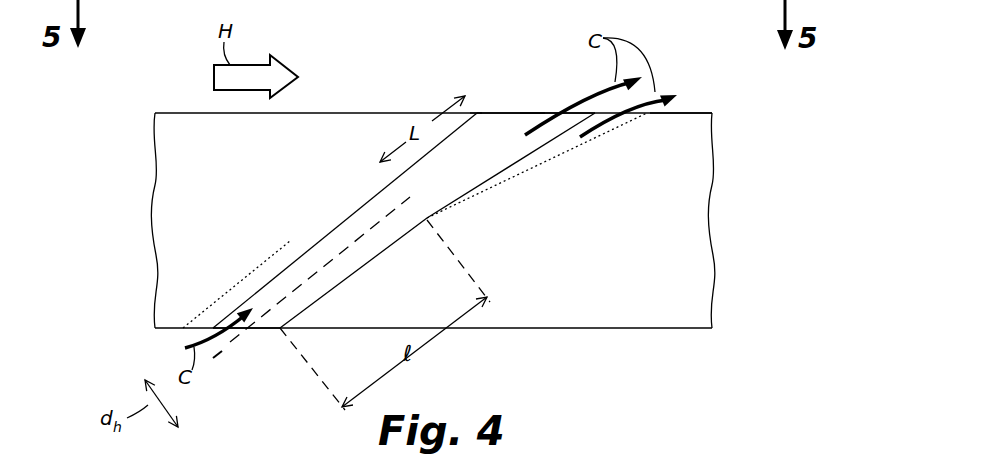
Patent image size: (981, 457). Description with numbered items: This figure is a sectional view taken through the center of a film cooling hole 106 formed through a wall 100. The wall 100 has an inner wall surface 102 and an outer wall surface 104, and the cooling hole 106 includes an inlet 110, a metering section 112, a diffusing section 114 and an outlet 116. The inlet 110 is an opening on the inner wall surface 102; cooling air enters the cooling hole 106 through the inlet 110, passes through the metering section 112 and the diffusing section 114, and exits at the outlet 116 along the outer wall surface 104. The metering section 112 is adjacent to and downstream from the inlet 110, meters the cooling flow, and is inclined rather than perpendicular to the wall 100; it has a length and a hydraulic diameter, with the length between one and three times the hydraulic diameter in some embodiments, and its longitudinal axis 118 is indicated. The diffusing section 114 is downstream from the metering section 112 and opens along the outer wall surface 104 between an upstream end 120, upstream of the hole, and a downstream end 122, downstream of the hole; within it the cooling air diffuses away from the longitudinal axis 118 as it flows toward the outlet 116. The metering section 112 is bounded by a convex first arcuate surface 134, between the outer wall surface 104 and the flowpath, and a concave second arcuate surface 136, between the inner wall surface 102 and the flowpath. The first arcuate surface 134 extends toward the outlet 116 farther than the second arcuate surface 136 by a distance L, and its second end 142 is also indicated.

The wall 100 is at (145, 215).
The inner wall surface 102 is at (690, 329).
The outer wall surface 104 is at (185, 112).
The cooling hole 106 is at (404, 227).
The inlet 110 is at (270, 330).
The metering section 112 is at (326, 295).
The diffusing section 114 is at (487, 129).
The outlet 116 is at (533, 113).
The longitudinal axis 118 is at (222, 352).
The upstream end 120 is at (472, 108).
The downstream end 122 is at (690, 112).
The first arcuate surface 134 is at (283, 270).
The second arcuate surface 136 is at (382, 254).
The second end 142 is at (228, 292).